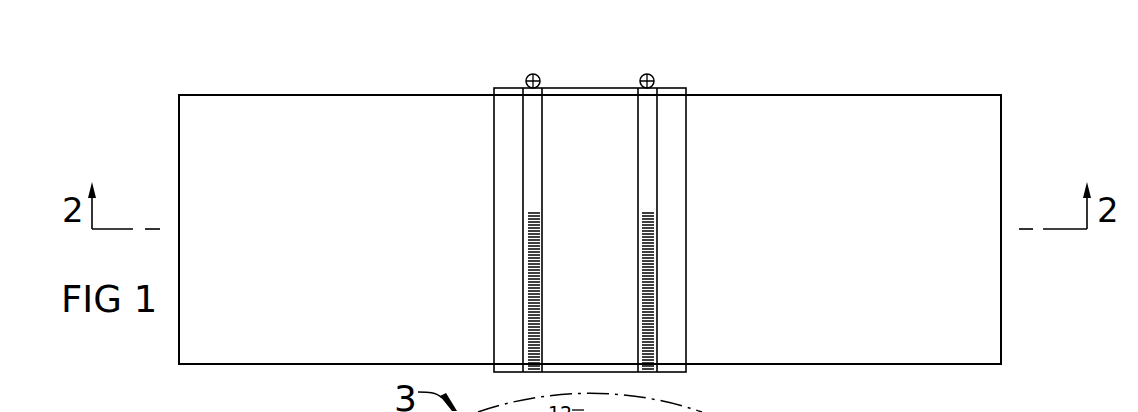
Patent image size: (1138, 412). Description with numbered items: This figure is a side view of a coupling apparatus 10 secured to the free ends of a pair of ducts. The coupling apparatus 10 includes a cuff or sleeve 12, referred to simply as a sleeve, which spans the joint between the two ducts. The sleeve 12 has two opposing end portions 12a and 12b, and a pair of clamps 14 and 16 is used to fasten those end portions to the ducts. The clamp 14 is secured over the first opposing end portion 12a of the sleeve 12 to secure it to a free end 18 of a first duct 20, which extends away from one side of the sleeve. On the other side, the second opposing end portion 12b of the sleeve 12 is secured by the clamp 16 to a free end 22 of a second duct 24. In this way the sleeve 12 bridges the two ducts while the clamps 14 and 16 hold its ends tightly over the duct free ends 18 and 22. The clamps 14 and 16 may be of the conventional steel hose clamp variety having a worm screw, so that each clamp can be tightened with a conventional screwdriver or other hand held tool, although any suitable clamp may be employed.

The coupling apparatus 10 is at (455, 56).
The sleeve 12 is at (576, 73).
The first opposing end portion 12a is at (511, 249).
The second opposing end portion 12b is at (677, 207).
The clamp 14 is at (527, 77).
The clamp 16 is at (653, 77).
The free end 18 is at (298, 365).
The first duct 20 is at (240, 385).
The free end 22 is at (823, 365).
The second duct 24 is at (882, 411).